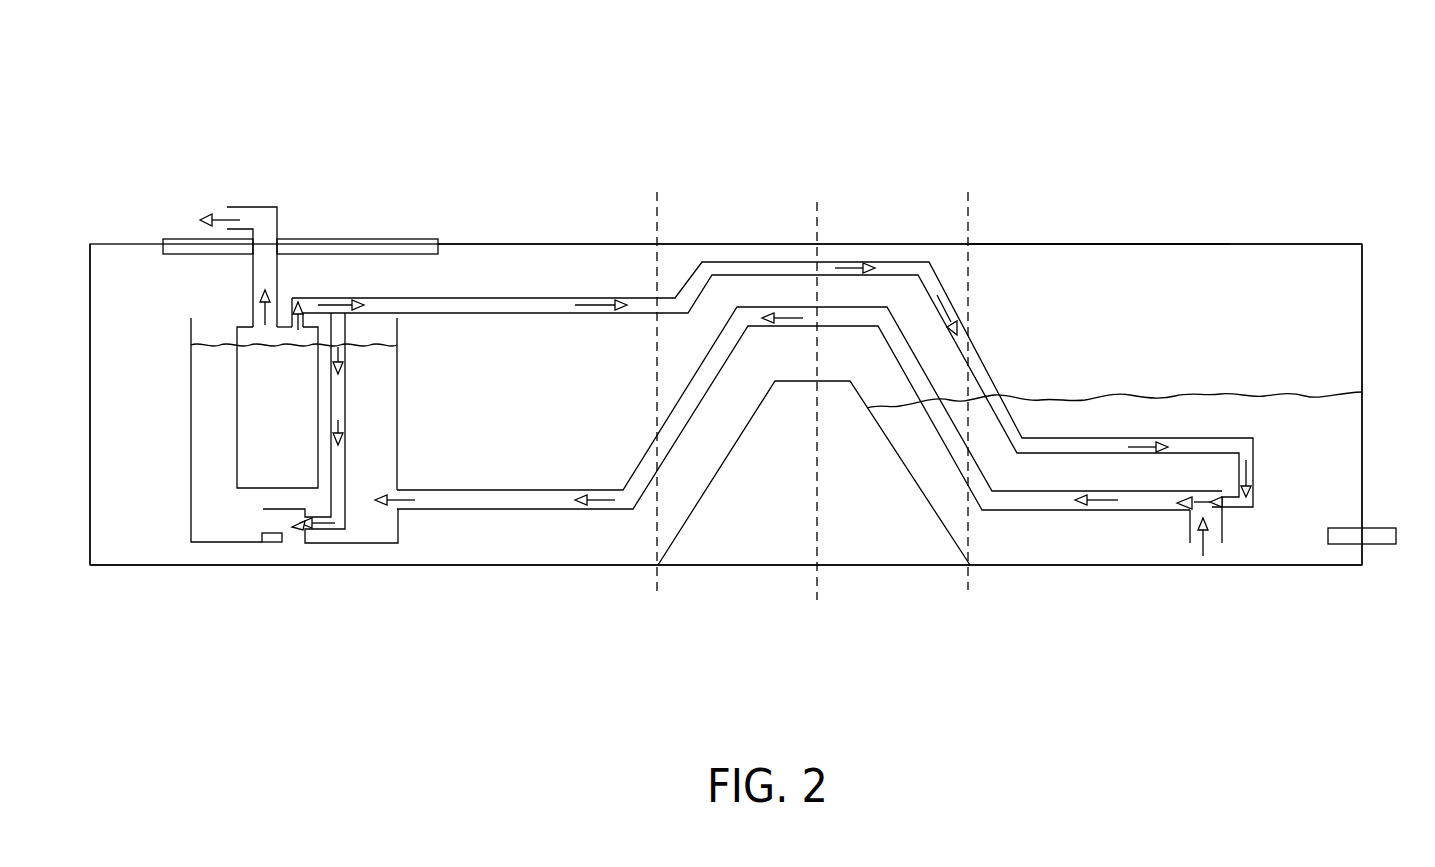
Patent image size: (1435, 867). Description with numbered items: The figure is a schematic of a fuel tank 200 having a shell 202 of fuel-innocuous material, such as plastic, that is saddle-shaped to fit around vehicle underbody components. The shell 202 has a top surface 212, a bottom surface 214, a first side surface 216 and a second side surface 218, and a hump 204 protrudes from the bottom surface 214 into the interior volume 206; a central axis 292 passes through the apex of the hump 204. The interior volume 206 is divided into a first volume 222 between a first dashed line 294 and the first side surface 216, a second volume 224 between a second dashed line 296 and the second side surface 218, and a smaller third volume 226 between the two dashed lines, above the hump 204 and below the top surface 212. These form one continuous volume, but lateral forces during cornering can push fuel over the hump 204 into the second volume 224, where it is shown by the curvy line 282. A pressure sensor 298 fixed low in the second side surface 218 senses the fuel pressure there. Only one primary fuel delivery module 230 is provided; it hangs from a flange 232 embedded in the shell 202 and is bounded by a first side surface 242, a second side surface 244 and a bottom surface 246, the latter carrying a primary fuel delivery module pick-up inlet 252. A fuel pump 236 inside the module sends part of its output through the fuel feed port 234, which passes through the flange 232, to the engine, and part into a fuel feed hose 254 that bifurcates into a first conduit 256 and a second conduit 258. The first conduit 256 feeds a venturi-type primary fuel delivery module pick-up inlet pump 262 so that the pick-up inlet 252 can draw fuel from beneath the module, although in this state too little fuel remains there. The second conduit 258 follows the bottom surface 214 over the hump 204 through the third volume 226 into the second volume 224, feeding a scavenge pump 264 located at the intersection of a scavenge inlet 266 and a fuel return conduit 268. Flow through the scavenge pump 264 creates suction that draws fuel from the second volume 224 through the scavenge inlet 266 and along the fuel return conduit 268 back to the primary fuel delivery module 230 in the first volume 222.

The fuel tank 200 is at (1282, 44).
The shell 202 is at (1244, 240).
The hump 204 is at (805, 380).
The interior volume 206 is at (1100, 246).
The top surface 212 is at (575, 244).
The bottom surface 214 is at (505, 566).
The first side surface 216 is at (90, 415).
The second side surface 218 is at (1362, 352).
The first volume 222 is at (373, 404).
The second volume 224 is at (1166, 404).
The third volume 226 is at (813, 404).
The primary fuel delivery module 230 is at (180, 550).
The flange 232 is at (407, 240).
The fuel feed port 234 is at (260, 207).
The fuel pump 236 is at (236, 327).
The first side surface of primary fuel delivery module 242 is at (190, 415).
The second side surface of primary fuel delivery module 244 is at (400, 415).
The bottom surface of primary fuel delivery module 246 is at (360, 545).
The primary fuel delivery module pick-up inlet 252 is at (275, 543).
The fuel feed hose 254 is at (300, 298).
The first conduit 256 is at (346, 410).
The second conduit 258 is at (517, 298).
The primary fuel delivery module pick-up inlet pump 262 is at (298, 530).
The scavenge pump 264 is at (1224, 512).
The scavenge inlet 266 is at (1188, 532).
The fuel return conduit 268 is at (540, 490).
The curvy line 282 is at (1185, 397).
The central axis 292 is at (817, 220).
The first dashed line 294 is at (657, 210).
The second dashed line 296 is at (968, 210).
The pressure sensor 298 is at (1368, 528).